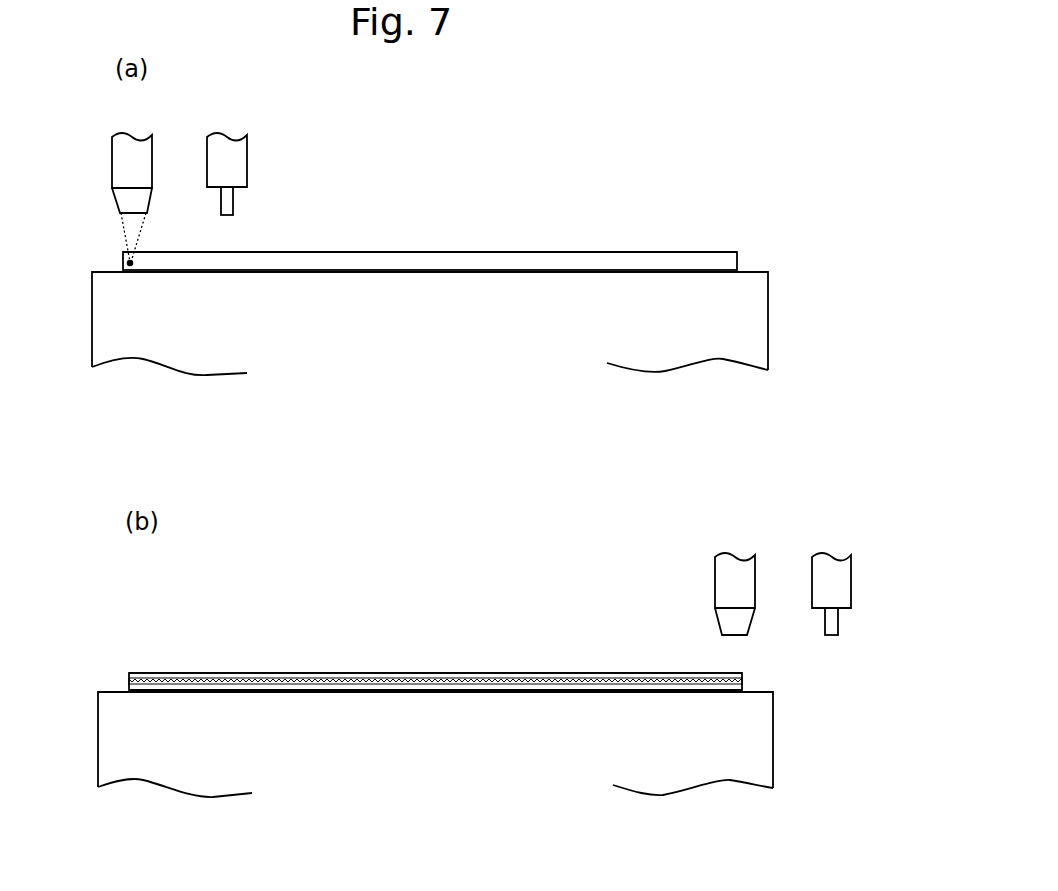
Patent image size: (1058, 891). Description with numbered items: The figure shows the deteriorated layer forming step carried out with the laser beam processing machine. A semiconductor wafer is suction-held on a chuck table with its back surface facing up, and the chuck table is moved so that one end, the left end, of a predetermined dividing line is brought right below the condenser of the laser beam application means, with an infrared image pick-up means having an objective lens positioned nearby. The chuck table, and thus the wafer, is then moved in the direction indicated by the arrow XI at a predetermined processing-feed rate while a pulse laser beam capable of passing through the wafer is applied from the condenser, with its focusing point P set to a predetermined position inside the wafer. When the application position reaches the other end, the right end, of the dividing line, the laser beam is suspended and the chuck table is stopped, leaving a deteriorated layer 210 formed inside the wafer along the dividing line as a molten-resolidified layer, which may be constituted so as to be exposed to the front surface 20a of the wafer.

The focusing point P is at (127, 263).
The front surface 20a is at (562, 693).
The deteriorated layer 210 is at (413, 680).
The arrow X1 XI is at (468, 406).